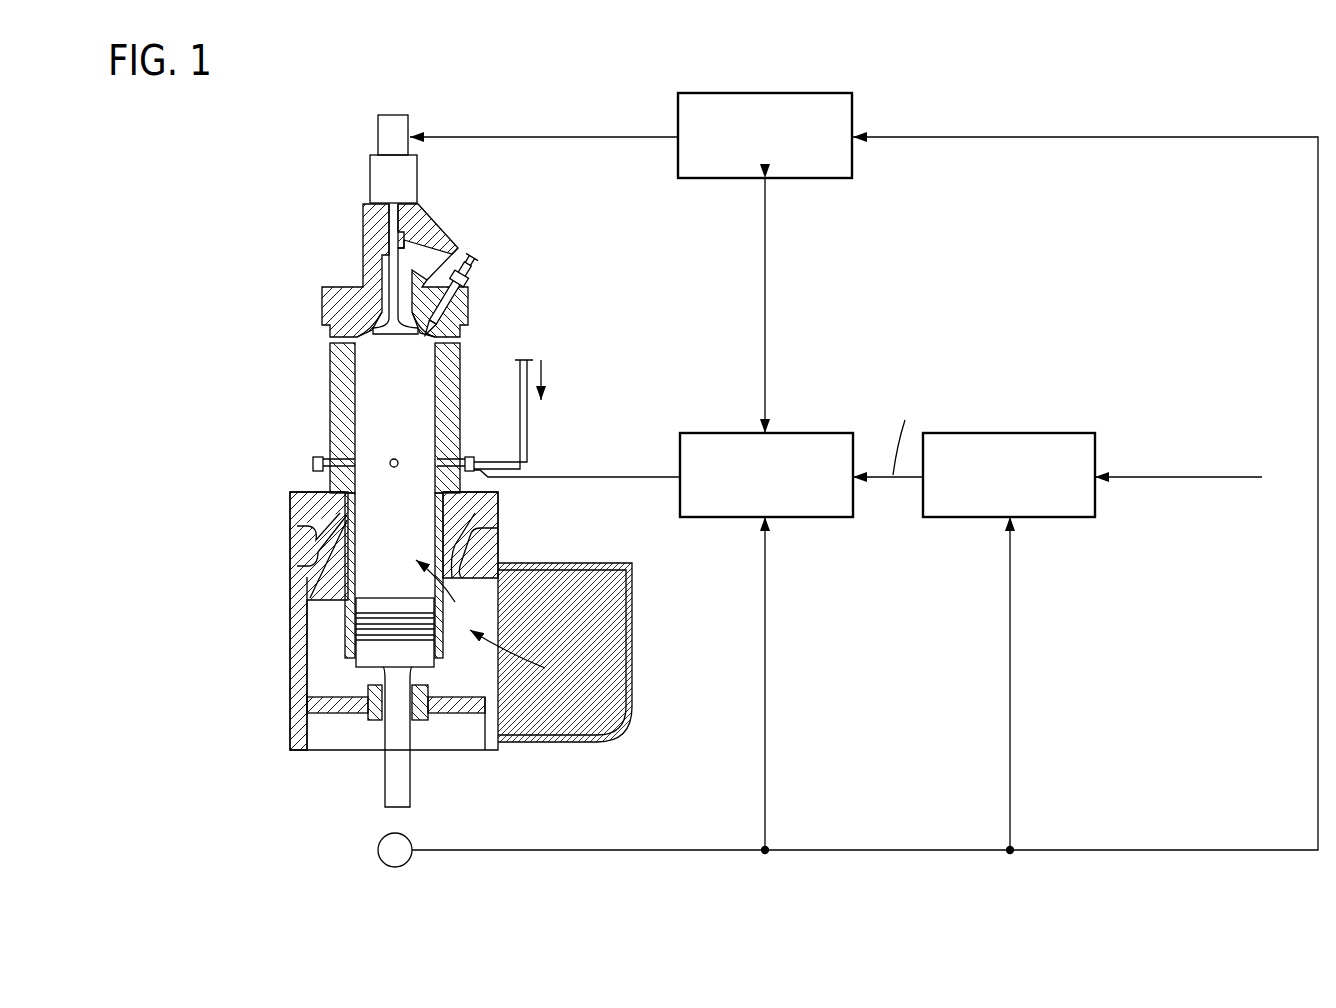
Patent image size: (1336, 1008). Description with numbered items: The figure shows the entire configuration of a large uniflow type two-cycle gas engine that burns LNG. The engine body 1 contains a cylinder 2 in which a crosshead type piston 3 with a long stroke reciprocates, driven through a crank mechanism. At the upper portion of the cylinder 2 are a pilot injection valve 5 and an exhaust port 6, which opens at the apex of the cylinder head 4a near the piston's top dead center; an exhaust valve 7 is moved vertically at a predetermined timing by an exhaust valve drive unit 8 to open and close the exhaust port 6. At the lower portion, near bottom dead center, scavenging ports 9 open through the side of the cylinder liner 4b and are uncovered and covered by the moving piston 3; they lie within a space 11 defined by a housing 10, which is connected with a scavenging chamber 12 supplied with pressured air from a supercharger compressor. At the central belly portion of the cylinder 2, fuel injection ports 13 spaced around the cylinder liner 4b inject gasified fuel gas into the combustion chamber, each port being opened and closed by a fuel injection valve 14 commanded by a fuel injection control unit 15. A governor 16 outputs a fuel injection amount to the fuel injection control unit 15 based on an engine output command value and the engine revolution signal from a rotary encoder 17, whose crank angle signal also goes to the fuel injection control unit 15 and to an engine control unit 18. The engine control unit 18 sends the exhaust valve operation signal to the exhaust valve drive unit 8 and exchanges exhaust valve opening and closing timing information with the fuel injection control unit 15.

The engine body 1 is at (288, 246).
The cylinder 2 is at (328, 389).
The piston 3 is at (372, 657).
The cylinder head 4a is at (330, 302).
The cylinder liner 4b is at (345, 417).
The pilot injection valve 5 is at (475, 275).
The exhaust port 6 is at (373, 307).
The exhaust valve 7 is at (408, 334).
The exhaust valve drive unit 8 is at (383, 178).
The scavenging port 9 is at (352, 584).
The housing 10 is at (490, 516).
The space 11 is at (478, 670).
The scavenging chamber 12 is at (634, 627).
The fuel injection port 13 is at (392, 459).
The fuel injection valve 14 is at (474, 459).
The fuel injection control unit 15 is at (793, 432).
The governor 16 is at (1008, 432).
The rotary encoder 17 is at (406, 838).
The engine control unit 18 is at (774, 93).